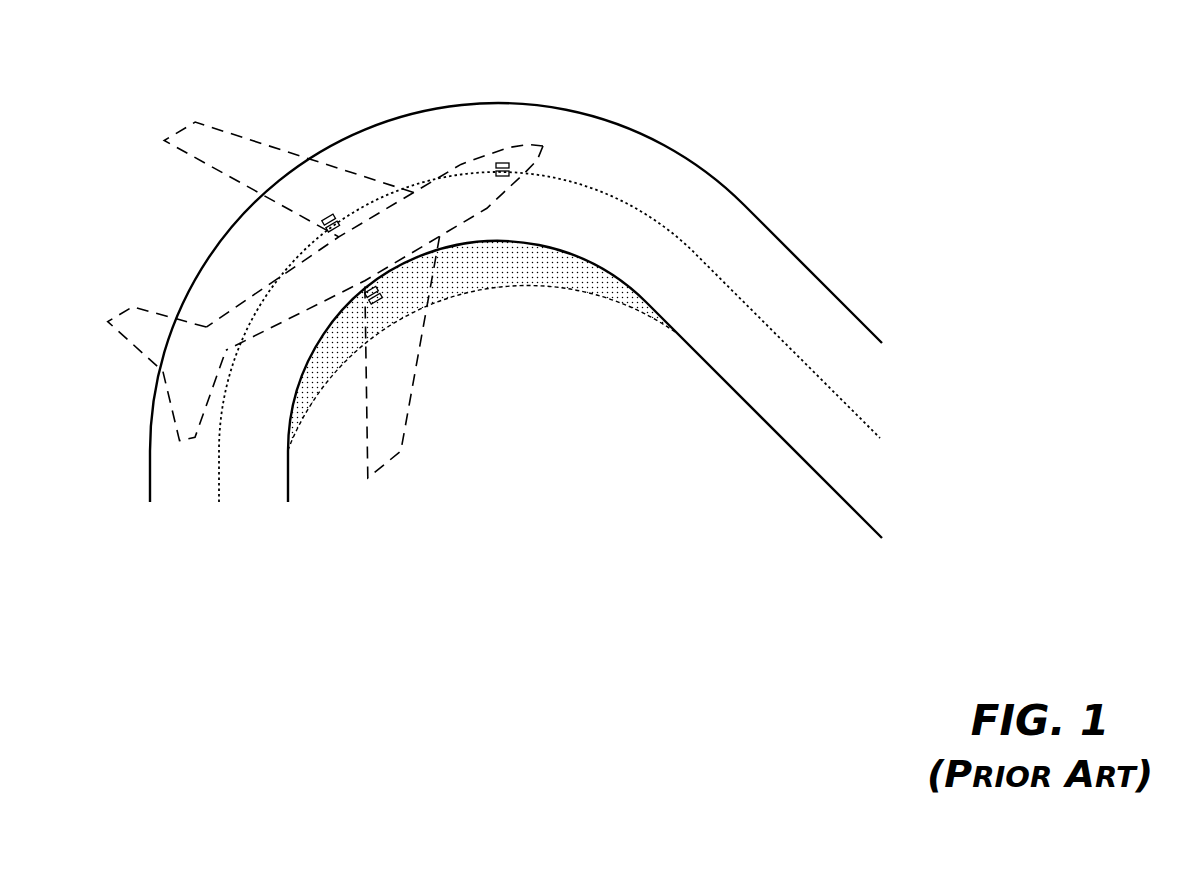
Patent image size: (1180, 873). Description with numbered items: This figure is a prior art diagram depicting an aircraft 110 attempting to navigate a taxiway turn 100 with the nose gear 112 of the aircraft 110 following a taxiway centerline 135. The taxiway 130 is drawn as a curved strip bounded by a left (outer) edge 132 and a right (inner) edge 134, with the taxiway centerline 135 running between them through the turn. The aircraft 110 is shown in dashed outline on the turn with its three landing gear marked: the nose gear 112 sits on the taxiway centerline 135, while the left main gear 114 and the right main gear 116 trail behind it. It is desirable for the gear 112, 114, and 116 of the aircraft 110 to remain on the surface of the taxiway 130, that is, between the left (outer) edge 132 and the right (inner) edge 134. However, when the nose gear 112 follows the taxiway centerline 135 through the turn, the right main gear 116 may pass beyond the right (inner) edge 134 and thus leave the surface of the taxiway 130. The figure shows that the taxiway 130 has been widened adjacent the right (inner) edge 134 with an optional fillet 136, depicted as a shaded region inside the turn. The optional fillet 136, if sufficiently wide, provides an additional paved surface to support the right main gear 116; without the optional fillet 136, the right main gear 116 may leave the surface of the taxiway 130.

The taxiway turn 100 is at (827, 193).
The aircraft 110 is at (398, 445).
The nose gear 112 is at (502, 162).
The left main gear 114 is at (322, 235).
The right main gear 116 is at (378, 302).
The taxiway 130 is at (687, 183).
The left (outer) edge of taxiway 132 is at (150, 468).
The right (inner) edge of taxiway 134 is at (288, 468).
The taxiway centerline 135 is at (780, 342).
The optional fillet 136 is at (608, 312).